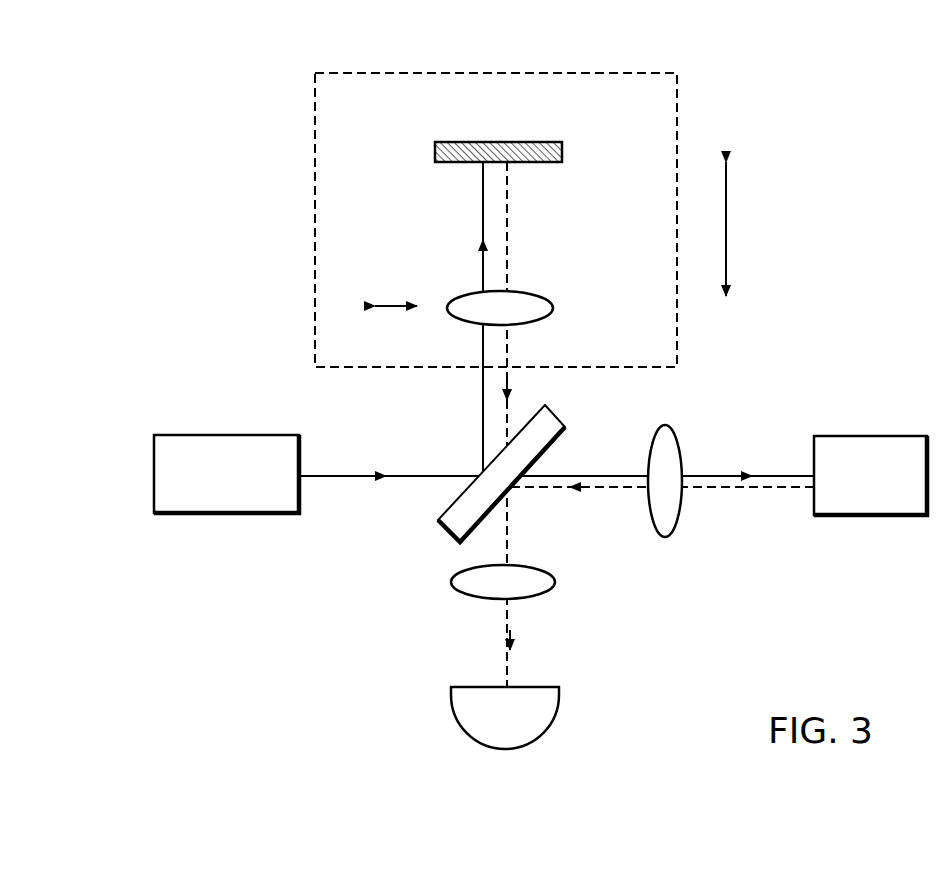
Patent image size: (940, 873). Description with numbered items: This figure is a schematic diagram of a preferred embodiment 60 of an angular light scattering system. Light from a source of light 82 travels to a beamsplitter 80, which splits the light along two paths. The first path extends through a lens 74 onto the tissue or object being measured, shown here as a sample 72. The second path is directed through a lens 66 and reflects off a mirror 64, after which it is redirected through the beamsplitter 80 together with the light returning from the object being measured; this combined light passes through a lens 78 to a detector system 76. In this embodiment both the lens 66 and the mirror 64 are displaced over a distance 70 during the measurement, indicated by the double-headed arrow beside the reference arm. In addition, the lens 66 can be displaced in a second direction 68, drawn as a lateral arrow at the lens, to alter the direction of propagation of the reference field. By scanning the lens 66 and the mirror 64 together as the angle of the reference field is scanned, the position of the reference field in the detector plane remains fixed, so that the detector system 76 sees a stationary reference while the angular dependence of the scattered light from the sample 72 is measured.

The angular light scattering system embodiment 60 is at (677, 73).
The mirror 64 is at (437, 142).
The lens 66 is at (470, 297).
The second direction 68 is at (374, 304).
The distance 70 is at (727, 266).
The sample 72 is at (862, 511).
The lens 74 is at (653, 522).
The detector system 76 is at (458, 720).
The lens 78 is at (468, 598).
The beamsplitter 80 is at (448, 533).
The source of light 82 is at (193, 515).